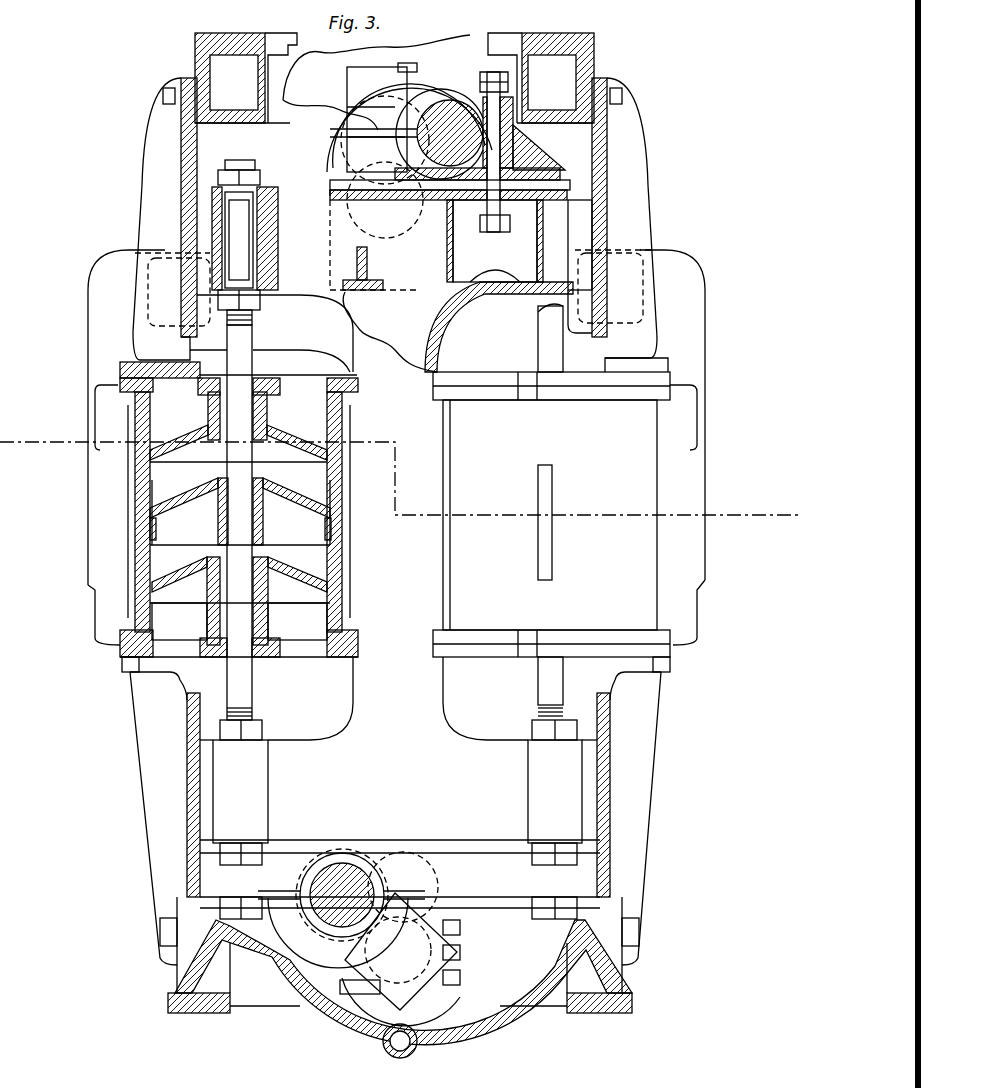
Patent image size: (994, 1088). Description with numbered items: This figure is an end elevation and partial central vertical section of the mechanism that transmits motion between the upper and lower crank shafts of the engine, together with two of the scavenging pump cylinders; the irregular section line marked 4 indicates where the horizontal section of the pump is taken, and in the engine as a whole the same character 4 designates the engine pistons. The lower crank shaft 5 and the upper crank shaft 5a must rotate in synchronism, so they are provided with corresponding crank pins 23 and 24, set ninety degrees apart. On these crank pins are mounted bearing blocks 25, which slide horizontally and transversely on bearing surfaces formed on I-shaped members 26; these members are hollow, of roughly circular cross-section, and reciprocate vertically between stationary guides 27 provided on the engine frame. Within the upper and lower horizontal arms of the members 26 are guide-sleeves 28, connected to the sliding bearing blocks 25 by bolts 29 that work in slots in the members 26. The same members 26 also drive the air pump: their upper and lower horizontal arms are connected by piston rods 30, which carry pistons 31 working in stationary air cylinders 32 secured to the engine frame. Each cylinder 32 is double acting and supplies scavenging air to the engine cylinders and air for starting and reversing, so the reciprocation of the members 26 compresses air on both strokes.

The engine pistons 4 is at (38, 418).
The lower crank shaft 5 is at (428, 892).
The upper crank shaft 5a is at (365, 150).
The crank pin 23 is at (350, 878).
The crank pin 24 is at (455, 110).
The bearing blocks 25 is at (456, 118).
The I-shaped members 26 is at (393, 471).
The stationary guides 27 is at (182, 186).
The guide-sleeves 28 is at (436, 276).
The bolts 29 is at (400, 64).
The piston rods 30 is at (237, 360).
The pistons 31 is at (294, 498).
The air cylinders 32 is at (135, 497).